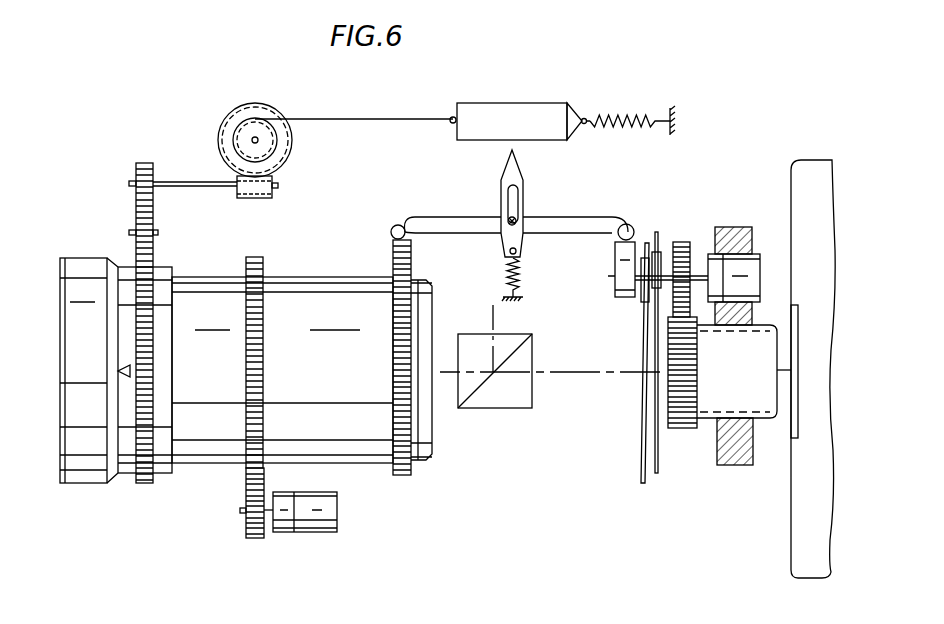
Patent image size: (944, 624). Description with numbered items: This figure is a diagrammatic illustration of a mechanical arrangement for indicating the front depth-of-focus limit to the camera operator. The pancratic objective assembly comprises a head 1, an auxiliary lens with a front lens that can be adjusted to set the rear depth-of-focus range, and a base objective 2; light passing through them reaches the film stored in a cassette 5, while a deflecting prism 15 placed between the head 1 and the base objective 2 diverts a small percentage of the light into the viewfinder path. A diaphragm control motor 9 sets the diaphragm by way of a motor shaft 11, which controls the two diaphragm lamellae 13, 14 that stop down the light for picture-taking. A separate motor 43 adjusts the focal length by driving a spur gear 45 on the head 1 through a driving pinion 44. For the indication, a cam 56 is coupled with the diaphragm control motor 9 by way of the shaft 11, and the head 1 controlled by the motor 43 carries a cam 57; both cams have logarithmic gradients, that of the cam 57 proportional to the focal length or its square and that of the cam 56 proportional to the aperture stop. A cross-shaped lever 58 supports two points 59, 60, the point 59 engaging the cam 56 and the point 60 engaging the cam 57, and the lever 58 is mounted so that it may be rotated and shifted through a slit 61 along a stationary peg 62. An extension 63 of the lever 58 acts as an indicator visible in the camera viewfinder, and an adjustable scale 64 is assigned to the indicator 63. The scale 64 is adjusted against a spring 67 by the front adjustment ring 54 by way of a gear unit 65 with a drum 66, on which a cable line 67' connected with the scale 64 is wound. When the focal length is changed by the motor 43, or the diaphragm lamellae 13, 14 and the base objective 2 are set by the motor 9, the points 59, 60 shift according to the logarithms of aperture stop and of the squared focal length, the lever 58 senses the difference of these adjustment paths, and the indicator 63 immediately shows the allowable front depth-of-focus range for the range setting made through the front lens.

The head 1 is at (309, 307).
The base objective 2 is at (713, 393).
The cassette 5 is at (795, 540).
The diaphragm control motor 9 is at (752, 276).
The motor shaft 11 is at (697, 268).
The diaphragm lamella 13 is at (643, 478).
The diaphragm lamella 14 is at (659, 472).
The deflecting prism 15 is at (503, 409).
The motor 43 is at (318, 521).
The driving pinion 44 is at (257, 540).
The spur gear 45 is at (255, 425).
The front adjustment ring 54 is at (105, 283).
The cam 56 is at (617, 288).
The cam 57 is at (398, 262).
The cross-shaped lever 58 is at (473, 224).
The point 59 is at (627, 225).
The point 60 is at (398, 228).
The slit 61 is at (514, 197).
The stationary peg 62 is at (515, 226).
The extension 63 is at (510, 168).
The adjustable scale 64 is at (523, 110).
The gear unit 65 is at (165, 215).
The drum 66 is at (240, 128).
The spring 67 is at (630, 109).
The cable line 67' is at (354, 101).